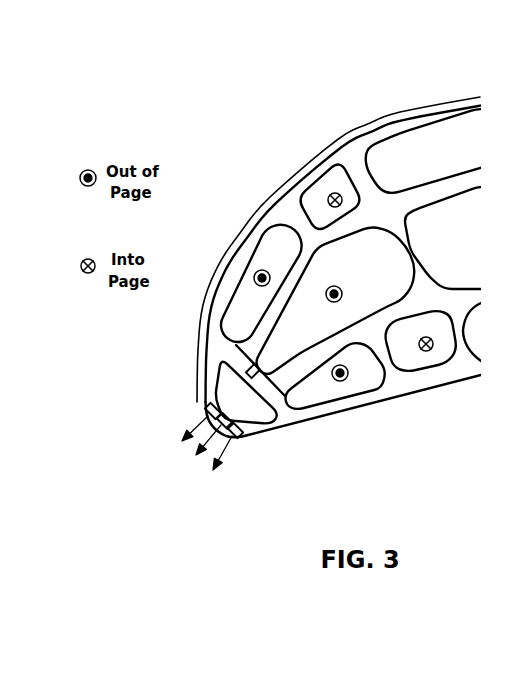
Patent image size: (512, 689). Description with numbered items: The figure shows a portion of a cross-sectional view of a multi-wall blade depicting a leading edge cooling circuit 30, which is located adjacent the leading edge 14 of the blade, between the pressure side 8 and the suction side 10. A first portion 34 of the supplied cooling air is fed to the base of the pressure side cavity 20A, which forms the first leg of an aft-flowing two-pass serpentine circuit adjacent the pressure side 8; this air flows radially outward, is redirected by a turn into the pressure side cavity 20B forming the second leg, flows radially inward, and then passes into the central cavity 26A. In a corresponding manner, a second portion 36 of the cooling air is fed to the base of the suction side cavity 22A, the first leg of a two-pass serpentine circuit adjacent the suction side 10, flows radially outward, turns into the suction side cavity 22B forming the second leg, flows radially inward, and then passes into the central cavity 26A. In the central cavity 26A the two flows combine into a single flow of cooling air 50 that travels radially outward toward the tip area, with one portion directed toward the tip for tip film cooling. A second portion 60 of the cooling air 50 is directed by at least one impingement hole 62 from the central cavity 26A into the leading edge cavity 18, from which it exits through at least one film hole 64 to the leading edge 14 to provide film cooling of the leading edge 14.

The pressure side 8 is at (432, 464).
The suction side 10 is at (363, 91).
The leading edge 14 is at (189, 490).
The leading edge cavity 18 is at (212, 383).
The pressure side cavity 20A is at (320, 405).
The pressure side cavity 20B is at (430, 372).
The suction side cavity 22A is at (266, 242).
The suction side cavity 22B is at (316, 183).
The central cavity 26A is at (403, 283).
The leading edge cooling circuit 30 is at (284, 207).
The first portion of the cooling air 34 is at (342, 382).
The second portion of the cooling air 36 is at (333, 192).
The cooling air 50 is at (329, 302).
The second portion of the cooling air 60 is at (203, 418).
The impingement hole 62 is at (247, 366).
The film hole 64 is at (243, 431).